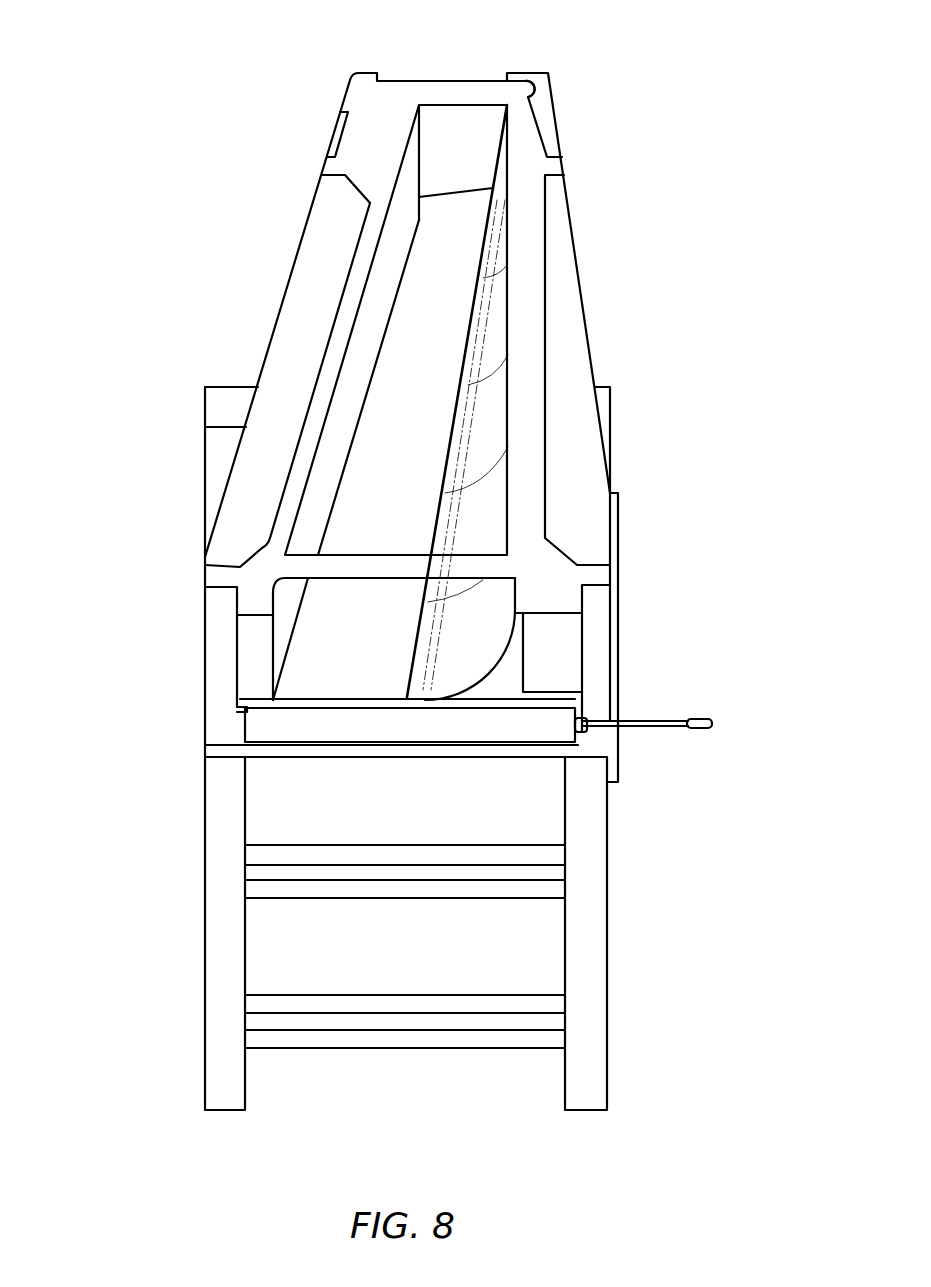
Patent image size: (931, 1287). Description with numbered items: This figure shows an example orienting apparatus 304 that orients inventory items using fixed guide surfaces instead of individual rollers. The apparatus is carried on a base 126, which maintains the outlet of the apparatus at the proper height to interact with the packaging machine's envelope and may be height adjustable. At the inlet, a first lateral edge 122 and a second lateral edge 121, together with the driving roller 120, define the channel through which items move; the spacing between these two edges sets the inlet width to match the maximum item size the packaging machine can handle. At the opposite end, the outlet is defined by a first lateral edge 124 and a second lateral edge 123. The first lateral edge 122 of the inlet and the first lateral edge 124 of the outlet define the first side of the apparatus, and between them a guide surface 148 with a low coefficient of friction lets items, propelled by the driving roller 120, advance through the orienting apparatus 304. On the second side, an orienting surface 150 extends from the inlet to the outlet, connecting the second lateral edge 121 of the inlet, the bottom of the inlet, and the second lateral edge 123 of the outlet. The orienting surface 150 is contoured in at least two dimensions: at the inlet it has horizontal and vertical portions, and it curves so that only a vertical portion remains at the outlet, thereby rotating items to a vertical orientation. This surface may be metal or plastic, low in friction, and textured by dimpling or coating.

The orienting apparatus 304 is at (674, 110).
The first lateral edge 124 is at (422, 153).
The guide surface 148 is at (373, 320).
The second lateral edge 123 is at (507, 135).
The orienting surface 150 is at (490, 408).
The second lateral edge 121 is at (495, 657).
The first lateral edge 122 is at (270, 627).
The driving roller 120 is at (270, 722).
The base 126 is at (222, 933).